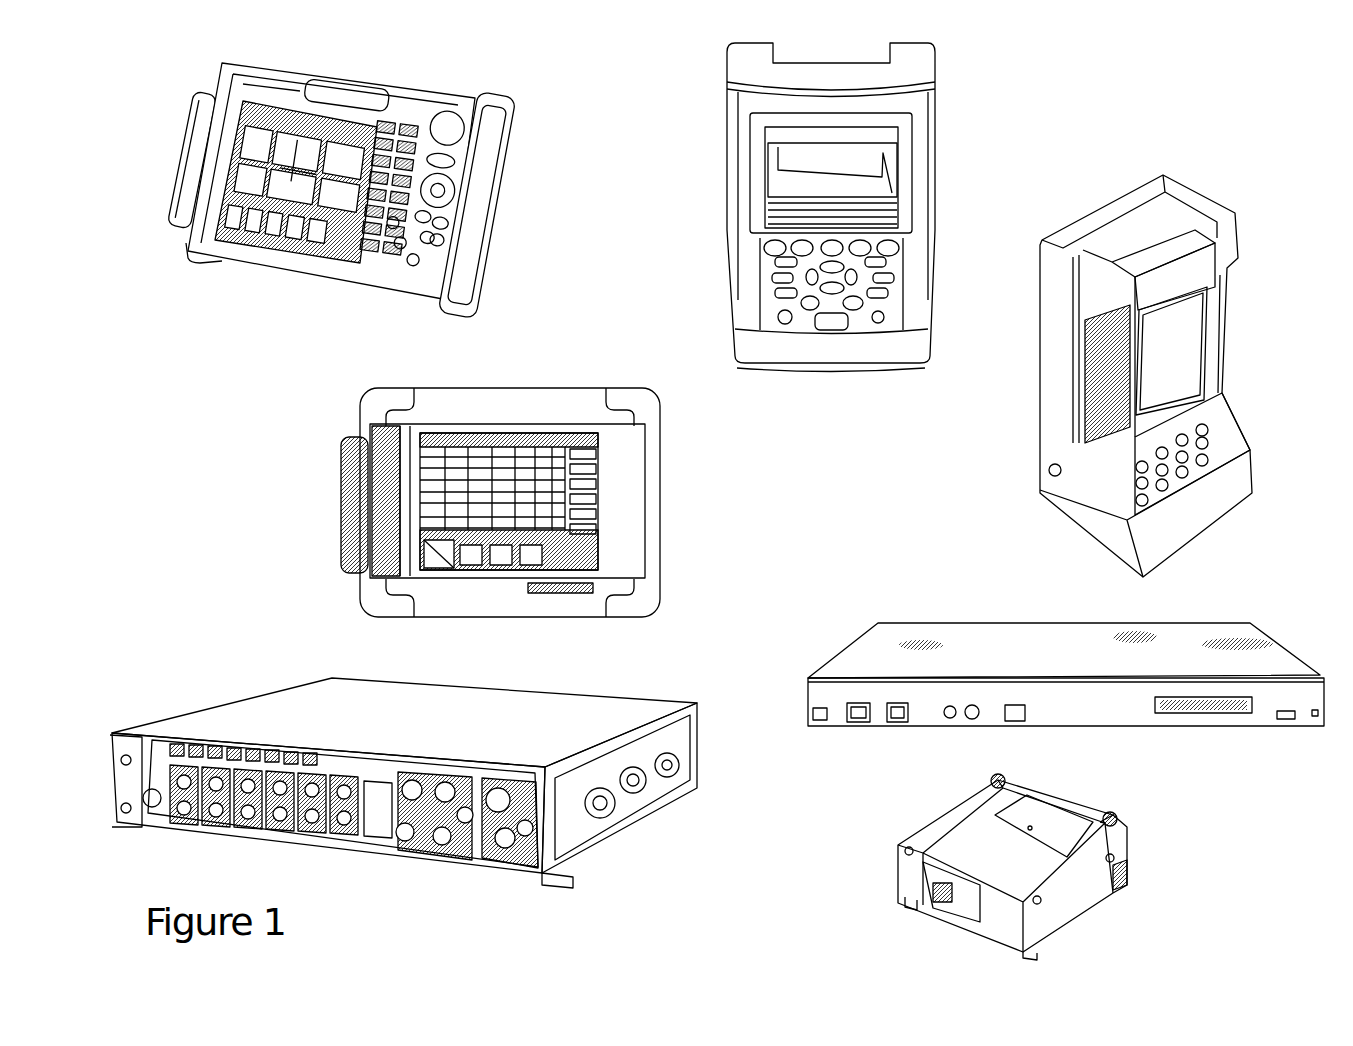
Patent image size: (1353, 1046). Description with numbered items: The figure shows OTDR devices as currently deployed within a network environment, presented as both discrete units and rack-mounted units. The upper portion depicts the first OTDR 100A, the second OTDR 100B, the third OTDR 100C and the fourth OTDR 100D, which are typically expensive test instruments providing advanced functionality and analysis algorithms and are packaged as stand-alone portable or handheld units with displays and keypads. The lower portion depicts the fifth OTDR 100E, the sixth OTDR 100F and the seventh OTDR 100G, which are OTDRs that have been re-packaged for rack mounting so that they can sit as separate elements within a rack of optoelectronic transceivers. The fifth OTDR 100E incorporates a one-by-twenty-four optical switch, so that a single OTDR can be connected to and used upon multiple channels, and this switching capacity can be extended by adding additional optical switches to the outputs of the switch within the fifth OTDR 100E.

The first OTDR 100A is at (367, 191).
The second OTDR 100B is at (864, 207).
The third OTDR 100C is at (538, 502).
The fourth OTDR 100D is at (1156, 368).
The fifth OTDR 100E is at (403, 795).
The sixth OTDR 100F is at (1039, 674).
The seventh OTDR 100G is at (987, 867).